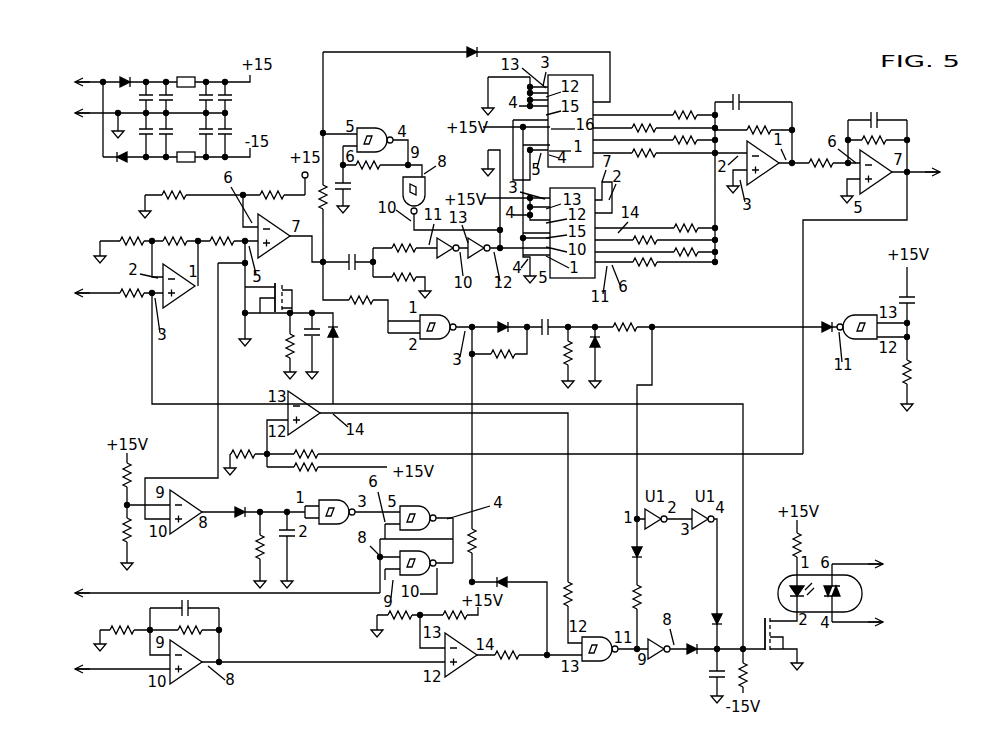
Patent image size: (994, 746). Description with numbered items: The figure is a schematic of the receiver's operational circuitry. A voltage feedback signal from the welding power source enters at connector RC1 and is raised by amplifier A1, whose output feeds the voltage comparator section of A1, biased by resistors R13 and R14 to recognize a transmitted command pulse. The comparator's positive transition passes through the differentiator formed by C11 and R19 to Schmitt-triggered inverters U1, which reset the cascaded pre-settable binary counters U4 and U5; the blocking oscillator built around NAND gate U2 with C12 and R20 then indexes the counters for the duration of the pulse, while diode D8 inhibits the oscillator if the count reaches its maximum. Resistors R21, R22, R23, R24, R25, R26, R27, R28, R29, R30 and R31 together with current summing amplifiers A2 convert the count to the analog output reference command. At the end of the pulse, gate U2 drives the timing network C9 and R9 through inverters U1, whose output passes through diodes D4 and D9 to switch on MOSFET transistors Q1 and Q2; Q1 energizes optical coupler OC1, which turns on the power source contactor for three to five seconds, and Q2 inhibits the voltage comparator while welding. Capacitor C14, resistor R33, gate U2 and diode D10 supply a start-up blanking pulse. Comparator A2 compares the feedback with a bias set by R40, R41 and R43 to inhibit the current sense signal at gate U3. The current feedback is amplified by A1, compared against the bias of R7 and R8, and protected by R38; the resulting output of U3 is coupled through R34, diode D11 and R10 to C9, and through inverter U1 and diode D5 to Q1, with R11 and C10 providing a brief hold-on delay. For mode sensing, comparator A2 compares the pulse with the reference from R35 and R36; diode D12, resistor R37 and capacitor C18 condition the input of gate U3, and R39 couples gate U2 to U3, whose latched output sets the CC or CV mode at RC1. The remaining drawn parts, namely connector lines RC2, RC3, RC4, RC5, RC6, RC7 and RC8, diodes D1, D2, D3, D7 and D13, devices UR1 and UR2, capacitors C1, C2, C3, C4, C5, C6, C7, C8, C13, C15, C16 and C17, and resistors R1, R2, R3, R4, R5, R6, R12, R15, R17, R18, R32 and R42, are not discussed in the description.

The connector RC1 is at (82, 94).
The connector line RC2 is at (82, 126).
The connector line RC3 is at (82, 298).
The connector line RC4 is at (82, 605).
The connector line RC5 is at (82, 682).
The connector line RC6 is at (935, 160).
The connector line RC7 is at (877, 552).
The connector line RC8 is at (877, 610).
The diode D1 is at (124, 72).
The diode D2 is at (122, 169).
The diode D3 is at (606, 350).
The diode D4 is at (706, 611).
The diode D5 is at (691, 640).
The diode D7 is at (502, 315).
The diode D8 is at (464, 61).
The diode D9 is at (346, 335).
The diode D10 is at (827, 317).
The diode D11 is at (653, 553).
The diode D12 is at (238, 501).
The diode D13 is at (505, 571).
The voltage regulator UR1 is at (187, 72).
The voltage regulator UR2 is at (187, 168).
The capacitor C1 is at (147, 92).
The capacitor C2 is at (164, 92).
The capacitor C3 is at (147, 137).
The capacitor C4 is at (167, 145).
The capacitor C5 is at (208, 92).
The capacitor C6 is at (227, 92).
The capacitor C7 is at (208, 138).
The capacitor C8 is at (227, 140).
The timing capacitor C9 is at (545, 317).
The capacitor C10 is at (701, 681).
The capacitor C11 is at (353, 250).
The capacitor C12 is at (343, 202).
The capacitor C13 is at (318, 340).
The capacitor C14 is at (923, 303).
The capacitor C15 is at (737, 89).
The capacitor C16 is at (877, 108).
The capacitor C17 is at (191, 612).
The capacitor C18 is at (299, 546).
The resistor R1 is at (132, 303).
The resistor R2 is at (132, 232).
The resistor R3 is at (175, 232).
The resistor R4 is at (222, 232).
The resistor R5 is at (122, 641).
The resistor R6 is at (195, 640).
The resistor R7 is at (458, 625).
The resistor R8 is at (400, 626).
The timing resistor R9 is at (556, 353).
The resistor R10 is at (625, 318).
The resistor R11 is at (758, 675).
The resistor R12 is at (781, 545).
The bias resistor R13 is at (189, 204).
The bias resistor R14 is at (273, 185).
The resistor R15 is at (362, 291).
The resistor R17 is at (506, 364).
The resistor R18 is at (399, 267).
The resistor R19 is at (396, 238).
The resistor R20 is at (370, 175).
The resistor R21 is at (648, 272).
The resistor R22 is at (690, 256).
The resistor R23 is at (646, 236).
The resistor R24 is at (685, 218).
The resistor R25 is at (645, 163).
The resistor R26 is at (684, 144).
The resistor R27 is at (642, 112).
The resistor R28 is at (685, 106).
The resistor R29 is at (760, 120).
The resistor R30 is at (816, 173).
The resistor R31 is at (863, 139).
The resistor R32 is at (274, 346).
The resistor R33 is at (924, 372).
The resistor R34 is at (654, 596).
The bias resistor R35 is at (109, 475).
The bias resistor R36 is at (109, 530).
The resistor R37 is at (241, 548).
The resistor R38 is at (508, 666).
The resistor R39 is at (489, 541).
The resistor R40 is at (247, 444).
The resistor R41 is at (310, 477).
The resistor R42 is at (585, 594).
The resistor R43 is at (311, 444).
The amplifier A1 is at (320, 453).
The amplifier A2 is at (531, 337).
The Schmitt-triggered inverter U1 is at (575, 461).
The NAND gate U2 is at (617, 224).
The NAND gate U3 is at (468, 588).
The pre-settable binary counter U4 is at (570, 111).
The pre-settable binary counter U5 is at (572, 242).
The MOSFET transistor Q1 is at (793, 634).
The MOSFET transistor Q2 is at (291, 296).
The optical coupler OC1 is at (807, 588).